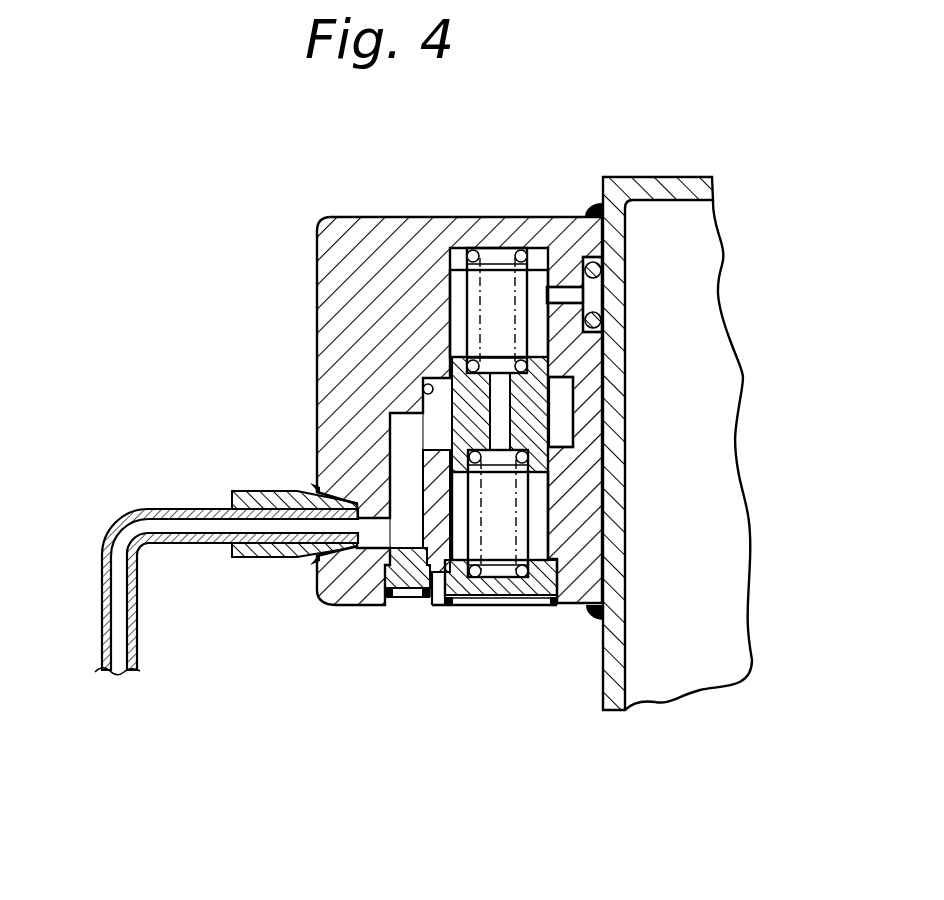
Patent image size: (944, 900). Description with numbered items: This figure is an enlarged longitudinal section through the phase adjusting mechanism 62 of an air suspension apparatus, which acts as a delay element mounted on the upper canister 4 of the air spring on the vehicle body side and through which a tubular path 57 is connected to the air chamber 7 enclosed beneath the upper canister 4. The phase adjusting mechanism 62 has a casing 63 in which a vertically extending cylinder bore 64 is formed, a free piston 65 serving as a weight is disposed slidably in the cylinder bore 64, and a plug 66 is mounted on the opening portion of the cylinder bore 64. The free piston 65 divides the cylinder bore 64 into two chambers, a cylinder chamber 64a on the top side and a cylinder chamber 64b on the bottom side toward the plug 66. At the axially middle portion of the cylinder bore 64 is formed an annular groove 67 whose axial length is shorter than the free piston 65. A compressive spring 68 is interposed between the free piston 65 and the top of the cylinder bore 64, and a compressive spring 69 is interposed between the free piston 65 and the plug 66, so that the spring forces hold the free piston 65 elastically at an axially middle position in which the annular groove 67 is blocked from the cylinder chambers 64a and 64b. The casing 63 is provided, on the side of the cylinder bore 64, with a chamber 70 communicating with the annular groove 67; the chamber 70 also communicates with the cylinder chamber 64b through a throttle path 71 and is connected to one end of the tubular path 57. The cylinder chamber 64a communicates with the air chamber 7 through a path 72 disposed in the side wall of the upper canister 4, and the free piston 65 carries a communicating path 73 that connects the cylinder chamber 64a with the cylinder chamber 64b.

The upper canister 4 is at (673, 187).
The air chamber 7 is at (680, 562).
The tubular path 57 is at (140, 513).
The phase adjusting mechanism 62 is at (369, 212).
The casing 63 is at (413, 262).
The cylinder bore 64 is at (456, 300).
The cylinder chamber 64a is at (500, 290).
The cylinder chamber 64b is at (502, 575).
The free piston 65 is at (548, 366).
The plug 66 is at (487, 583).
The annular groove 67 is at (425, 378).
The compressive spring 68 is at (522, 290).
The compressive spring 69 is at (462, 603).
The chamber 70 is at (400, 530).
The throttle path 71 is at (405, 567).
The path 72 is at (613, 302).
The communicating path 73 is at (497, 420).